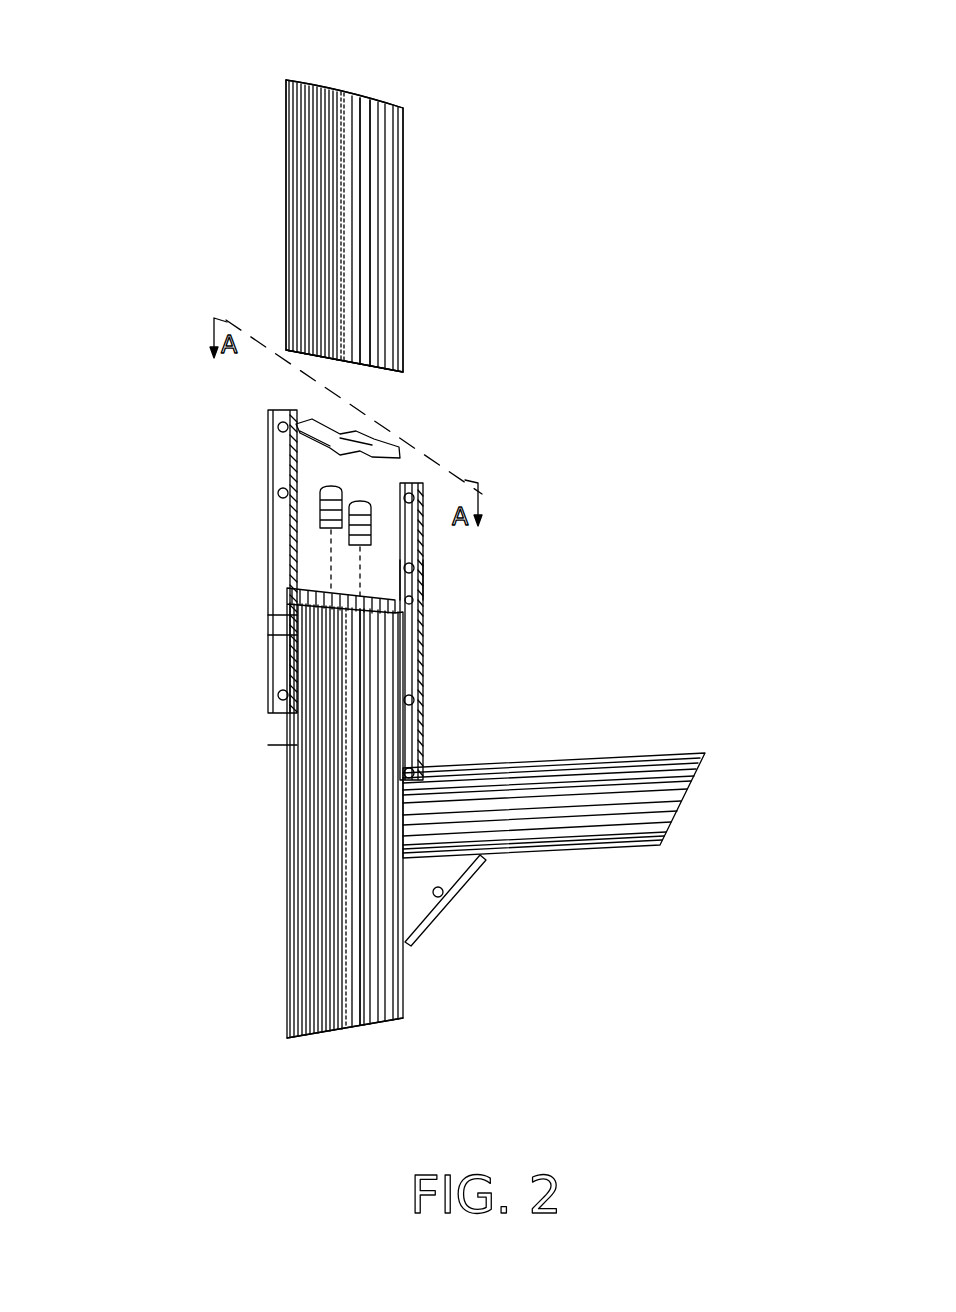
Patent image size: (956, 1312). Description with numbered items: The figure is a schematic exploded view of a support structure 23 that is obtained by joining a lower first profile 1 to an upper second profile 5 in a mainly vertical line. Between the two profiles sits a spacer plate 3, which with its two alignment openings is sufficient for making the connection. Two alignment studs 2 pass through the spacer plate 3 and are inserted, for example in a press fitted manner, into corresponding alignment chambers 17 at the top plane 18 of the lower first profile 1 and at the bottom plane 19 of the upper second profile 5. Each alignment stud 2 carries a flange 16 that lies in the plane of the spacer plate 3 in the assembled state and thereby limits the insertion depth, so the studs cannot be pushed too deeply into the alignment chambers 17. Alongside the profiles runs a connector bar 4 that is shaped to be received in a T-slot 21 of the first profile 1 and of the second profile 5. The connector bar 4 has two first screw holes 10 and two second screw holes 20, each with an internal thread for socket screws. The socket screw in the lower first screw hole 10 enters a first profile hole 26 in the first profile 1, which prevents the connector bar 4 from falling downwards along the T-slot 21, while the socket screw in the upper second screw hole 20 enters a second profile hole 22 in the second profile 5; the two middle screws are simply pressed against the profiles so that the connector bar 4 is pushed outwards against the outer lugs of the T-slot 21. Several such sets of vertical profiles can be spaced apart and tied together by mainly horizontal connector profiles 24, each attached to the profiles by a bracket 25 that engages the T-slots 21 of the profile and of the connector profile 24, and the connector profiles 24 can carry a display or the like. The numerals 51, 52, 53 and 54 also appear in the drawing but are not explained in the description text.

The lower first profile 1 is at (412, 966).
The alignment studs 2 is at (423, 490).
The spacer plate 3 is at (312, 432).
The connector bar 4 is at (440, 580).
The upper second profile 5 is at (418, 196).
The first screw holes 10 is at (415, 700).
The flange 16 is at (330, 530).
The alignment chambers 17 is at (273, 670).
The top plane 18 is at (420, 600).
The bottom plane 19 is at (345, 377).
The second screw holes 20 is at (420, 562).
The T-slot 21 is at (368, 137).
The second profile hole 22 is at (362, 232).
The support structure 23 is at (214, 112).
The connector profiles 24 is at (640, 790).
The bracket 25 is at (455, 870).
The first profile hole 26 is at (365, 735).
The left bracket 51 is at (268, 707).
The bracket portion 52 is at (285, 625).
The bracket bolt 53 is at (278, 493).
The bracket bolt 54 is at (278, 427).